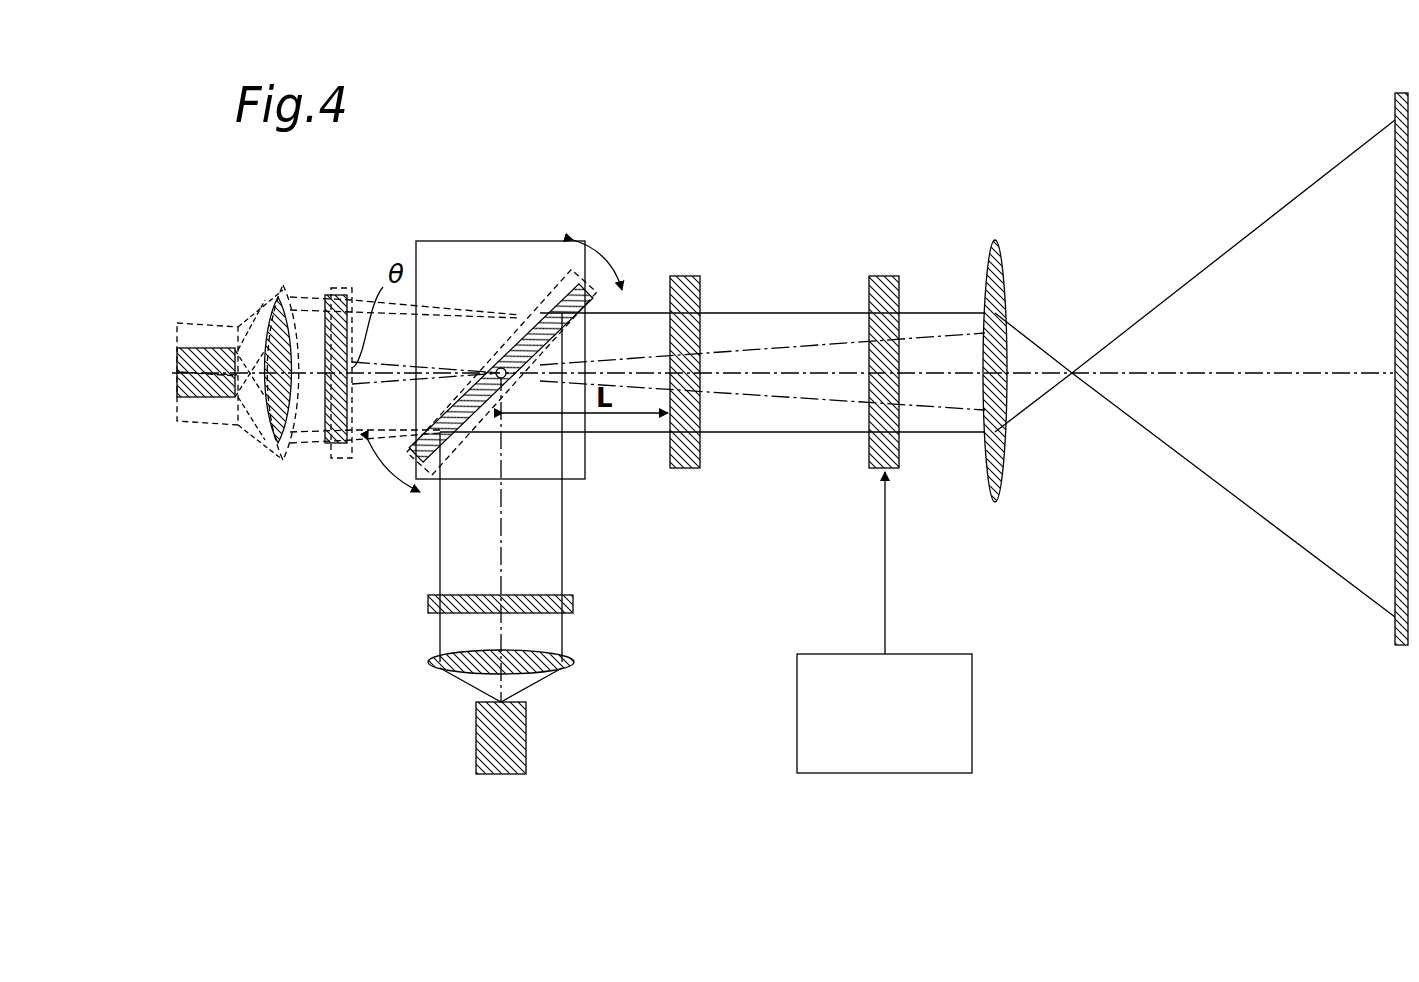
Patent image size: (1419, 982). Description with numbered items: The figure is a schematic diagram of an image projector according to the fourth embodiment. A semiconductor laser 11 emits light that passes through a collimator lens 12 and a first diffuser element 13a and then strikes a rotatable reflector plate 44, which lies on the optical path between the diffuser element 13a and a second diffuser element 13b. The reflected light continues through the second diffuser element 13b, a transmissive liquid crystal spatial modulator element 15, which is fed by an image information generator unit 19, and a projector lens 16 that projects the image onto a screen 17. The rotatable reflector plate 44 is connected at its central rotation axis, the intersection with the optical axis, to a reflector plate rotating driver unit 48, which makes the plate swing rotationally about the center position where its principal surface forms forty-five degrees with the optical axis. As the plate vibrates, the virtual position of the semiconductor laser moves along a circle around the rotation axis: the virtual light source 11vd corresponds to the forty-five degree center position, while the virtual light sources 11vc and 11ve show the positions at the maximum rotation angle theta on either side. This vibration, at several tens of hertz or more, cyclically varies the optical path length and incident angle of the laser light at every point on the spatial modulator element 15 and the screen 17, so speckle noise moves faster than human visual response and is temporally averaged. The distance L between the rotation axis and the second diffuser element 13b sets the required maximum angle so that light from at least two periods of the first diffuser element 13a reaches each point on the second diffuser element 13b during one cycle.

The semiconductor laser 11 is at (525, 738).
The collimator lens 12 is at (572, 662).
The diffuser element 13a is at (575, 602).
The second diffuser element 13b is at (686, 280).
The transmissive liquid crystal spatial modulator element 15 is at (886, 280).
The projector lens 16 is at (1003, 268).
The screen 17 is at (1395, 202).
The image information generator unit 19 is at (925, 654).
The rotatable reflector plate 44 is at (540, 300).
The reflector plate rotating driver unit 48 is at (452, 241).
The virtual light source 11vd is at (178, 385).
The virtual light source 11ve is at (205, 323).
The virtual light source 11vc is at (192, 424).